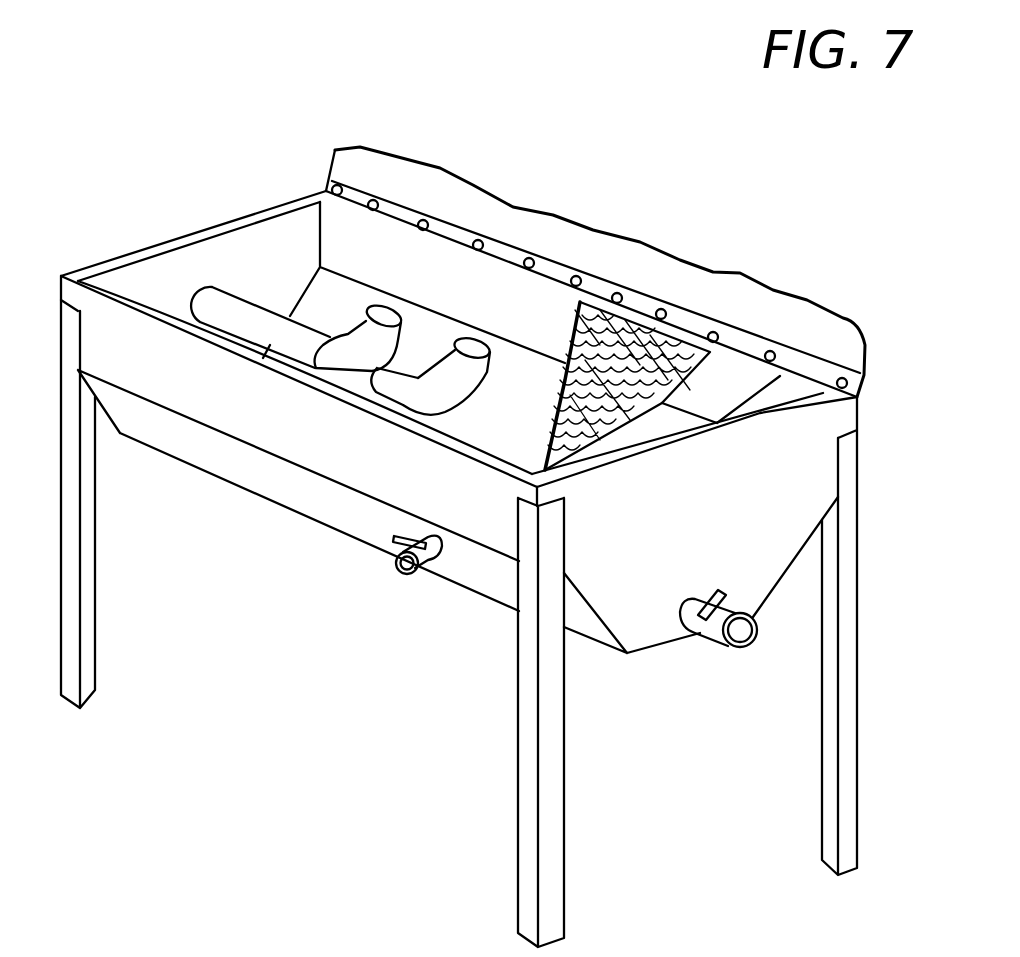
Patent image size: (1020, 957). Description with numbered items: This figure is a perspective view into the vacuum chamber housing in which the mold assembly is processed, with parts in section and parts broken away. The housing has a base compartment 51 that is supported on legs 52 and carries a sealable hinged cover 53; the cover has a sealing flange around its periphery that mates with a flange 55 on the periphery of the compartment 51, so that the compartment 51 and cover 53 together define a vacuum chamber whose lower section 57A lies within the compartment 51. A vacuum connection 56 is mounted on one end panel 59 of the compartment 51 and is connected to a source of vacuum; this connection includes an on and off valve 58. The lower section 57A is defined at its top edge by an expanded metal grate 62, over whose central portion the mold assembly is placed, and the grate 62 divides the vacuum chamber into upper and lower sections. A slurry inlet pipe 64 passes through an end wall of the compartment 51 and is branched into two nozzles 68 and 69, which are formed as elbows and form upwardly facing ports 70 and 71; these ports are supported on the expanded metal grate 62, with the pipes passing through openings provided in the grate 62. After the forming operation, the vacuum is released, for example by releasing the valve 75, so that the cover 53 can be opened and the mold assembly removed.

The base compartment 51 is at (800, 477).
The legs 52 is at (88, 630).
The sealable hinged cover 53 is at (840, 342).
The flange 55 is at (125, 273).
The vacuum connection 56 is at (740, 632).
The lower section of vacuum chamber 57A is at (214, 272).
The on and off valve 58 is at (717, 640).
The end panel 59 is at (627, 597).
The expanded metal grate 62 is at (637, 413).
The slurry inlet pipe 64 is at (263, 332).
The nozzle 68 is at (363, 337).
The nozzle 69 is at (460, 393).
The upwardly facing port 70 is at (386, 320).
The upwardly facing port 71 is at (472, 348).
The valve 75 is at (402, 575).